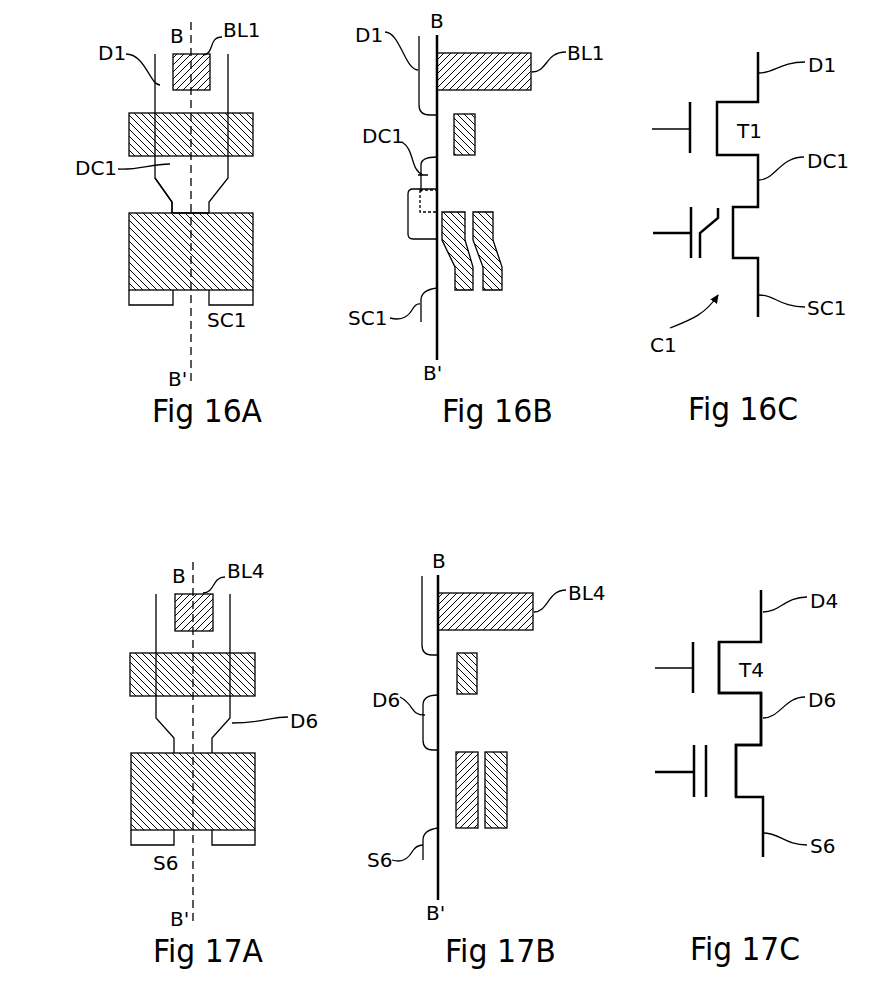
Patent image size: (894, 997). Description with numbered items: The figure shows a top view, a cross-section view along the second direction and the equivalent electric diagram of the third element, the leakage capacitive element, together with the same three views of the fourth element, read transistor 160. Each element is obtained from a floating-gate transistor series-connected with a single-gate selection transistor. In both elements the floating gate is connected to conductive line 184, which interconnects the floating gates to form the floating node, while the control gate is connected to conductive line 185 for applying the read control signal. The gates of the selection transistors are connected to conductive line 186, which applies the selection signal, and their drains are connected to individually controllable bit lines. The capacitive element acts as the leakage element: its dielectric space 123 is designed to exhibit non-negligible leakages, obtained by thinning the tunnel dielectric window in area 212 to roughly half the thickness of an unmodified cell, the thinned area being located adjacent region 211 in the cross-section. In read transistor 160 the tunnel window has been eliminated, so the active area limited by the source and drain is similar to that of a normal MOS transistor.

In FIG. 16A, the dielectric space 123 is at (435, 222).
In FIG. 17C, the read transistor 160 is at (720, 835).
In FIG. 16A, the conductive line 184 is at (239, 259).
In FIG. 16B, the conductive line 184 is at (465, 290).
In FIG. 17A, the conductive line 184 is at (225, 822).
In FIG. 17B, the conductive line 184 is at (465, 828).
In FIG. 17C, the conductive line 184 is at (705, 760).
In FIG. 16A, the conductive line 185 is at (213, 262).
In FIG. 16B, the conductive line 185 is at (483, 238).
In FIG. 16C, the conductive line 185 is at (690, 247).
In FIG. 17A, the conductive line 185 is at (232, 812).
In FIG. 17B, the conductive line 185 is at (497, 780).
In FIG. 17C, the conductive line 185 is at (692, 783).
In FIG. 16A, the conductive line 186 is at (240, 135).
In FIG. 16B, the conductive line 186 is at (477, 132).
In FIG. 16C, the conductive line 186 is at (688, 115).
In FIG. 17A, the conductive line 186 is at (247, 672).
In FIG. 17B, the conductive line 186 is at (478, 672).
In FIG. 17C, the conductive line 186 is at (692, 655).
In FIG. 16A, the first impurity region 211 is at (172, 203).
In FIG. 16B, the first impurity region 211 is at (410, 240).
In FIG. 16B, the thinned dielectric area 212 is at (441, 210).
In FIG. 16C, the thinned dielectric area 212 is at (725, 206).